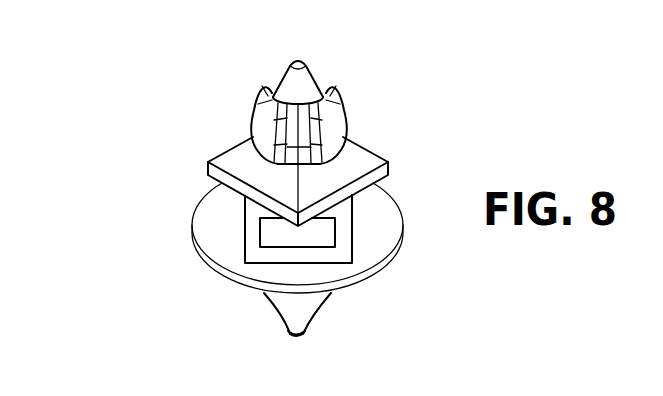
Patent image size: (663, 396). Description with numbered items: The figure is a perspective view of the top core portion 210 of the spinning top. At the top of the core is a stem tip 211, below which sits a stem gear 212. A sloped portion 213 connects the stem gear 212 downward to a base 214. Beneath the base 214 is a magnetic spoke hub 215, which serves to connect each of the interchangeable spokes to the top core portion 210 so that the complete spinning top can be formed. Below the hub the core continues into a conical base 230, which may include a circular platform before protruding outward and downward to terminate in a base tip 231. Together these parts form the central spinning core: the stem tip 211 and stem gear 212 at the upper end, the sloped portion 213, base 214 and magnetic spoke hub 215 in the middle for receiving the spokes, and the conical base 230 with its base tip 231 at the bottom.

The top core portion 210 is at (158, 110).
The stem tip 211 is at (287, 58).
The stem gear 212 is at (348, 87).
The sloped portion 213 is at (345, 161).
The base 214 is at (208, 187).
The magnetic spoke hub 215 is at (268, 237).
The conical base 230 is at (259, 305).
The base tip 231 is at (287, 344).